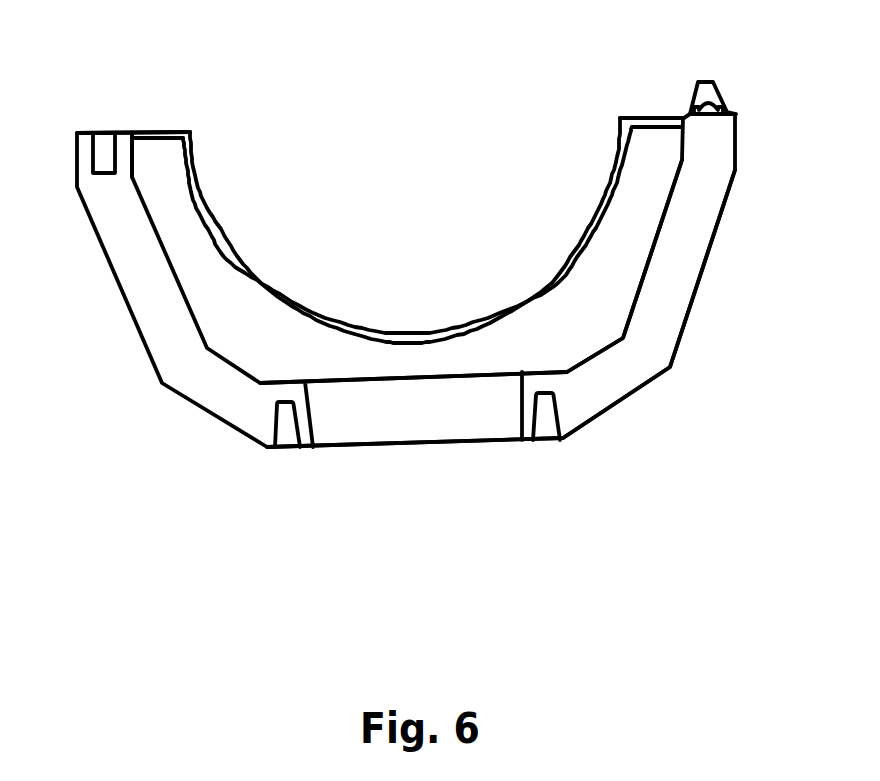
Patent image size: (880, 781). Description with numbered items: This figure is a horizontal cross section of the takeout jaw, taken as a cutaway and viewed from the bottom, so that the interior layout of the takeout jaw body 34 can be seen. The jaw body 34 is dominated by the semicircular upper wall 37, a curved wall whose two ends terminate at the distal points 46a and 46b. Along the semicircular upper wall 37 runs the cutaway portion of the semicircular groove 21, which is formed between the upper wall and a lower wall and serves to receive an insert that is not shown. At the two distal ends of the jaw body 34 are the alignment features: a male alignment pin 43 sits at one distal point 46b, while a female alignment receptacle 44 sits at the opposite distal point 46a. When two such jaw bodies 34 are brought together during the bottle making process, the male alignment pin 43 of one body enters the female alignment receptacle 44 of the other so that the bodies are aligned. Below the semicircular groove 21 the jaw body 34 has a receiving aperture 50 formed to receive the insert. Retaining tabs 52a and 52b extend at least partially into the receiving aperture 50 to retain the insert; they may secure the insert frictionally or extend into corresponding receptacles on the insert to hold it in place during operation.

The semicircular groove 21 is at (577, 322).
The takeout jaw body 34 is at (651, 378).
The semicircular upper wall 37 is at (244, 238).
The male alignment pin 43 is at (738, 88).
The female alignment receptacle 44 is at (96, 142).
The distal point 46a is at (173, 122).
The distal point 46b is at (642, 106).
The receiving aperture 50 is at (413, 425).
The retaining tab 52a is at (310, 464).
The retaining tab 52b is at (517, 431).